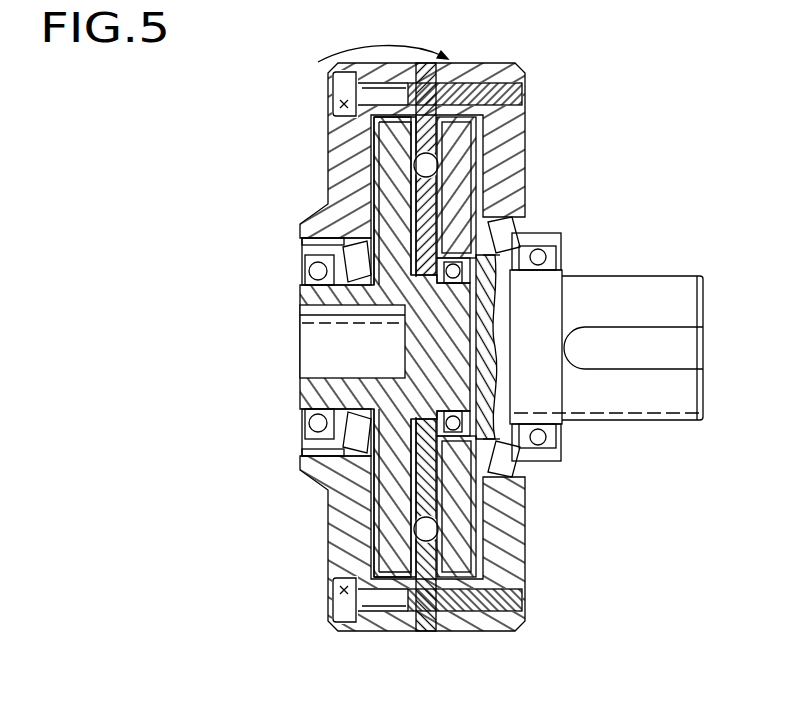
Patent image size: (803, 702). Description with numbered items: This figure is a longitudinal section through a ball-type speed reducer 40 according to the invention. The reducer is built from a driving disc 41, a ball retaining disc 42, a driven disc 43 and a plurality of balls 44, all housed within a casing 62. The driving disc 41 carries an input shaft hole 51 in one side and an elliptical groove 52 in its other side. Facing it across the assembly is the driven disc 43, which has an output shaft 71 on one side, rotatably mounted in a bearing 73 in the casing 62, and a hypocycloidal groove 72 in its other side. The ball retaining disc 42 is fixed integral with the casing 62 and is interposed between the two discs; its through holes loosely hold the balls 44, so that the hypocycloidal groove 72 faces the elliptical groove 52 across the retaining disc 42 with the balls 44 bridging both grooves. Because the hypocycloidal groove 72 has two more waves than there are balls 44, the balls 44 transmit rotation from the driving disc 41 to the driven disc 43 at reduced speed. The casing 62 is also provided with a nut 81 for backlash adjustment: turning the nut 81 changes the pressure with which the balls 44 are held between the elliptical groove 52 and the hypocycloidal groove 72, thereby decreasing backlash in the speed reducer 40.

The ball-type speed reducer 40 is at (516, 61).
The driving disc 41 is at (370, 146).
The ball retaining disc 42 is at (498, 134).
The driven disc 43 is at (482, 192).
The balls 44 is at (442, 143).
The input shaft hole 51 is at (327, 373).
The elliptical groove 52 is at (412, 528).
The casing 62 is at (363, 57).
The output shaft 71 is at (645, 272).
The hypocycloidal groove 72 is at (500, 513).
The bearing 73 is at (525, 233).
The nut 81 is at (300, 422).